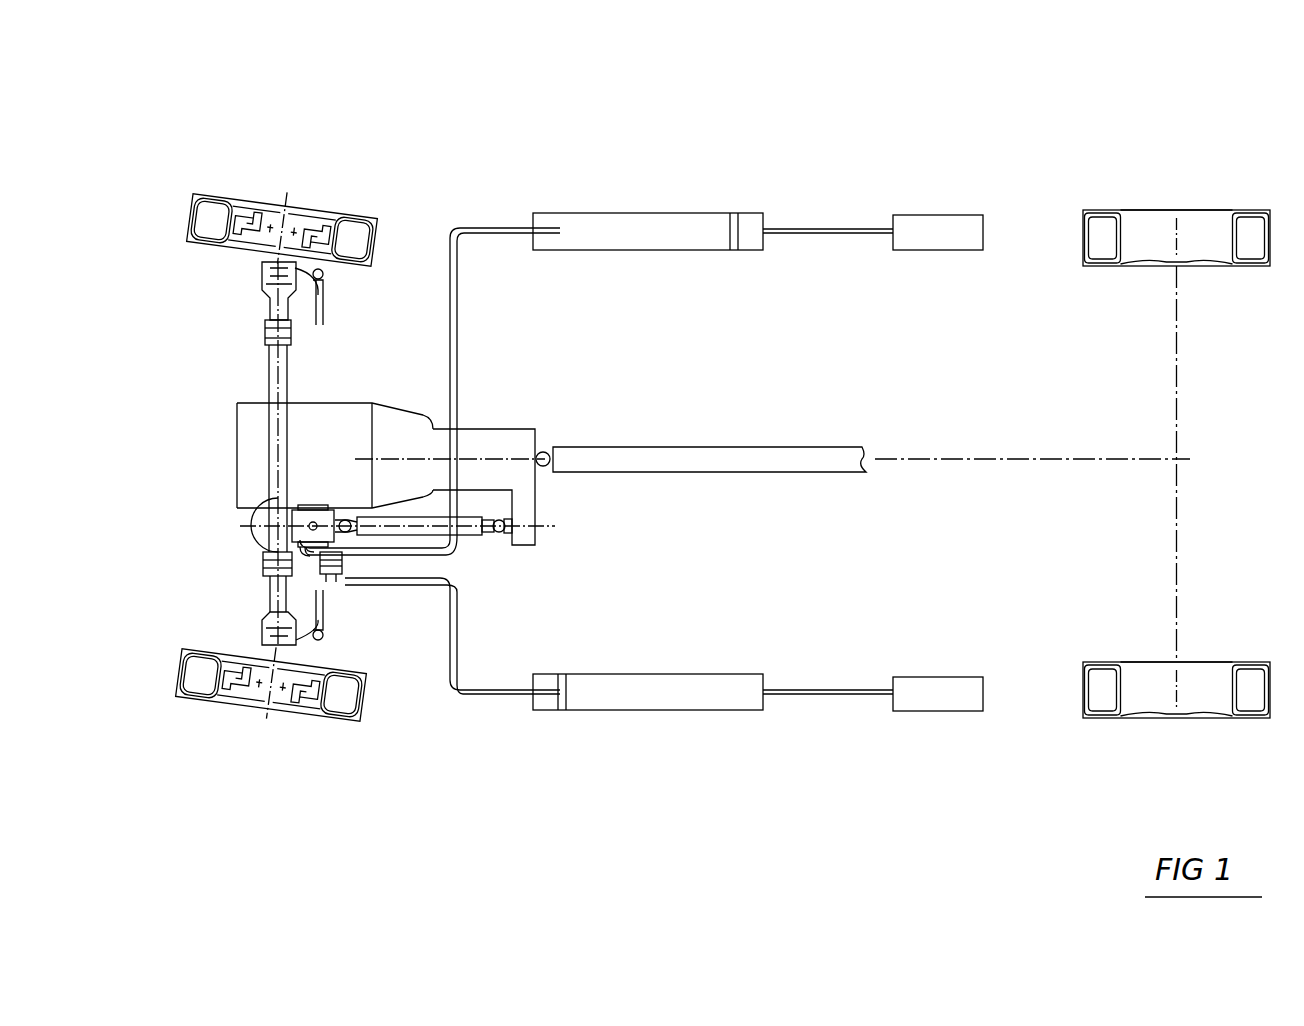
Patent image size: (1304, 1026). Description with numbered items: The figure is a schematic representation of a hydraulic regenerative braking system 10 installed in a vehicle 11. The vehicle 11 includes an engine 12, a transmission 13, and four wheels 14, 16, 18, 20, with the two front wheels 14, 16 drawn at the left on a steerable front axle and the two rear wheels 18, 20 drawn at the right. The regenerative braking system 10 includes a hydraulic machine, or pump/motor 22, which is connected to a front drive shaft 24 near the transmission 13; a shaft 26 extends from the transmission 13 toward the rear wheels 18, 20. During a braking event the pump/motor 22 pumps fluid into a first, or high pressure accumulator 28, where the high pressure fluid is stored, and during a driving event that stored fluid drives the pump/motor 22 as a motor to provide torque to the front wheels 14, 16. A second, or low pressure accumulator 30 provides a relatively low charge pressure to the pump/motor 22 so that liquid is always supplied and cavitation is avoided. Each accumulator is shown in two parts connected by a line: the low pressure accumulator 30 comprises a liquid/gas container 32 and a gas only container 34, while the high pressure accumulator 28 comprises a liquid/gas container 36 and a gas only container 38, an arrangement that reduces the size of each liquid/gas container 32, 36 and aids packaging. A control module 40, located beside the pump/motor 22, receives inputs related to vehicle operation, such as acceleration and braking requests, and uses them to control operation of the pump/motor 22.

The hydraulic regenerative braking system 10 is at (428, 156).
The vehicle 11 is at (1130, 118).
The engine 12 is at (237, 458).
The transmission 13 is at (487, 430).
The wheel 14 is at (232, 200).
The wheel 16 is at (288, 728).
The wheel 18 is at (1212, 210).
The wheel 20 is at (1212, 720).
The pump/motor 22 is at (345, 543).
The front drive shaft 24 is at (484, 535).
The drive shaft 26 is at (812, 457).
The high pressure accumulator 28 is at (683, 712).
The low pressure accumulator 30 is at (710, 212).
The liquid/gas container 32 is at (578, 214).
The gas only container 34 is at (920, 214).
The liquid/gas container 36 is at (620, 712).
The gas only container 38 is at (938, 716).
The control module 40 is at (338, 580).